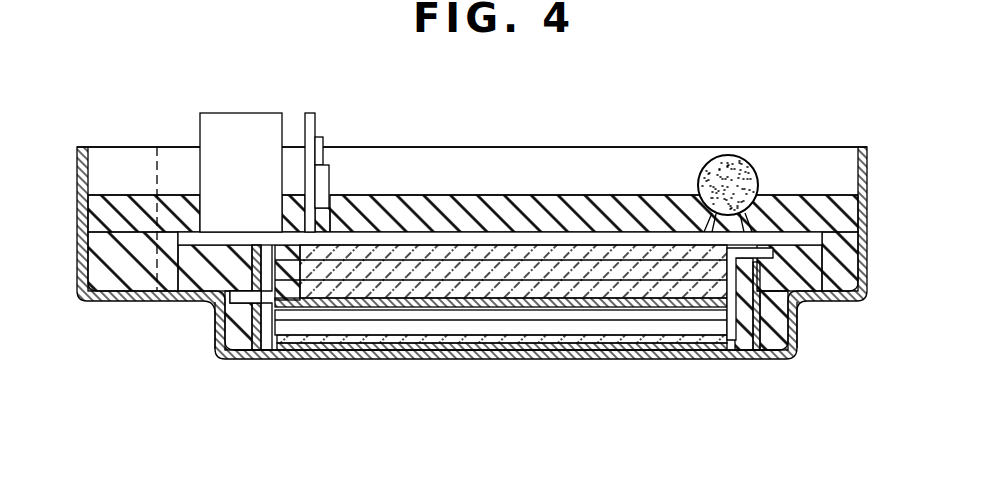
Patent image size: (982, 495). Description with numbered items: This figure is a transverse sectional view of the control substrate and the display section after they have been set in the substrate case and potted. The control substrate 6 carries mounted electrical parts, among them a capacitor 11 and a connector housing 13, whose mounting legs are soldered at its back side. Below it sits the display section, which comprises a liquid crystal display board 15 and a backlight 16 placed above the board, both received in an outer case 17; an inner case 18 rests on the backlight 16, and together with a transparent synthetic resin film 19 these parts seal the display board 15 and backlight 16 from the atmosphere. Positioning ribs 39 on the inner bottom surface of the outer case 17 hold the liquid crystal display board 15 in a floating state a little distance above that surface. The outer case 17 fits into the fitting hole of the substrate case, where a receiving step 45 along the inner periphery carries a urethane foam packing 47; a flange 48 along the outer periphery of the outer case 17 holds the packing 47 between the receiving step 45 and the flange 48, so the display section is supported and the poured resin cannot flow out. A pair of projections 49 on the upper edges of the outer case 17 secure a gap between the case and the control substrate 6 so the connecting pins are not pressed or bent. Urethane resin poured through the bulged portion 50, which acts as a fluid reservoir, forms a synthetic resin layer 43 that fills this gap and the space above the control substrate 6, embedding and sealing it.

The control substrate 6 is at (521, 230).
The capacitor 11 is at (728, 155).
The connector housing 13 is at (245, 127).
The liquid crystal display board 15 is at (591, 340).
The backlight 16 is at (525, 327).
The outer case 17 is at (673, 360).
The inner case 18 is at (433, 293).
The transparent synthetic resin film 19 is at (579, 287).
The positioning rib 39 is at (273, 362).
The synthetic resin layer 43 is at (805, 208).
The receiving step 45 is at (217, 337).
The packing 47 is at (768, 360).
The flange 48 is at (812, 302).
The projection 49 is at (250, 250).
The bulged portion 50 is at (113, 163).